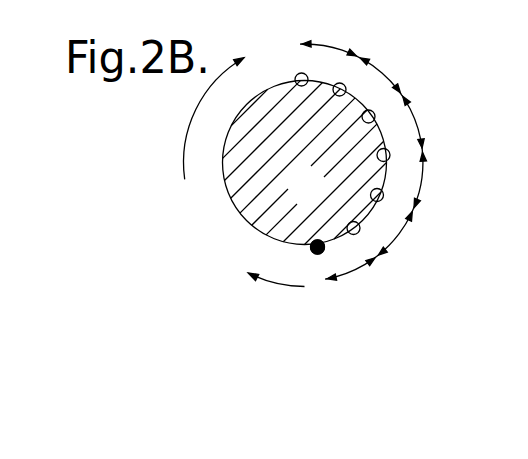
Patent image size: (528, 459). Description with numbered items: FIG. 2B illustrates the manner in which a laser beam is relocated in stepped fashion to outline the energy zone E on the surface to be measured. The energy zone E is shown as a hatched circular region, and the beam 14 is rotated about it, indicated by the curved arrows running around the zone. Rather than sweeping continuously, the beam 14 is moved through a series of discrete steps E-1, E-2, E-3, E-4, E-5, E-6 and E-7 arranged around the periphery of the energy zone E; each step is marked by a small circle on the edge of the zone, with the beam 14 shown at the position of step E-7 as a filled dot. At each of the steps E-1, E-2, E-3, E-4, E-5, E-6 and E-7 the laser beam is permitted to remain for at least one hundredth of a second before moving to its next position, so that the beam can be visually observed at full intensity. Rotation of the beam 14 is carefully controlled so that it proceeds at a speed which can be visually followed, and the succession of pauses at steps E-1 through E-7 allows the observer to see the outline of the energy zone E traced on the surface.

The energy zone E is at (316, 177).
The step E-1 is at (300, 60).
The step E-2 is at (350, 73).
The step E-3 is at (386, 105).
The step E-4 is at (404, 152).
The step E-5 is at (396, 202).
The step E-6 is at (365, 242).
The step E-7 is at (322, 264).
The beam 14 is at (313, 248).